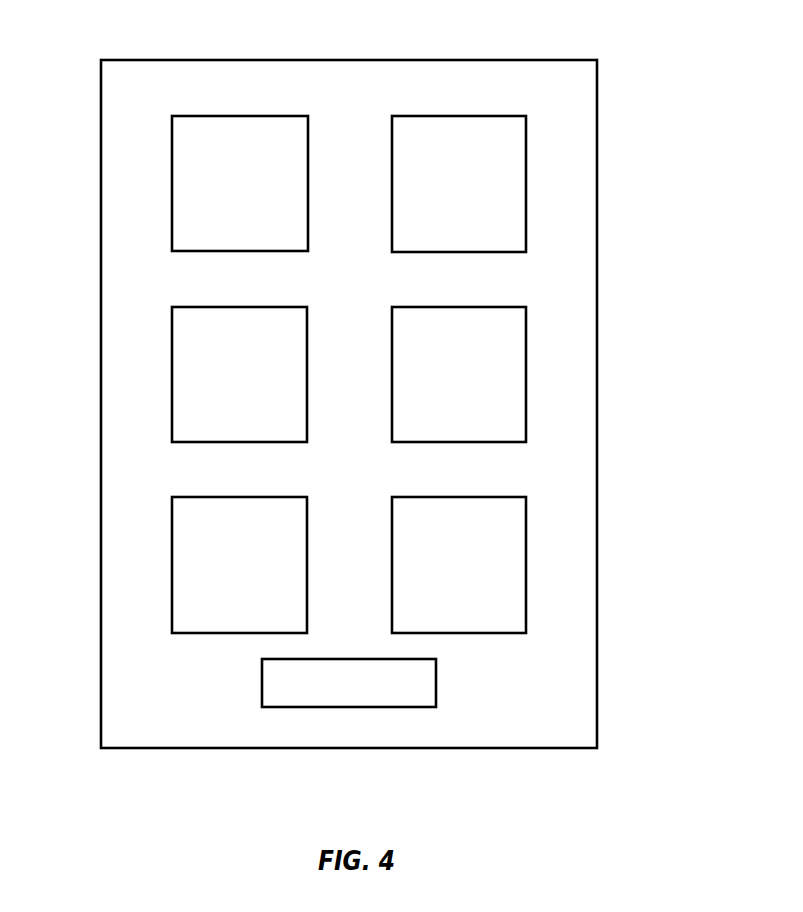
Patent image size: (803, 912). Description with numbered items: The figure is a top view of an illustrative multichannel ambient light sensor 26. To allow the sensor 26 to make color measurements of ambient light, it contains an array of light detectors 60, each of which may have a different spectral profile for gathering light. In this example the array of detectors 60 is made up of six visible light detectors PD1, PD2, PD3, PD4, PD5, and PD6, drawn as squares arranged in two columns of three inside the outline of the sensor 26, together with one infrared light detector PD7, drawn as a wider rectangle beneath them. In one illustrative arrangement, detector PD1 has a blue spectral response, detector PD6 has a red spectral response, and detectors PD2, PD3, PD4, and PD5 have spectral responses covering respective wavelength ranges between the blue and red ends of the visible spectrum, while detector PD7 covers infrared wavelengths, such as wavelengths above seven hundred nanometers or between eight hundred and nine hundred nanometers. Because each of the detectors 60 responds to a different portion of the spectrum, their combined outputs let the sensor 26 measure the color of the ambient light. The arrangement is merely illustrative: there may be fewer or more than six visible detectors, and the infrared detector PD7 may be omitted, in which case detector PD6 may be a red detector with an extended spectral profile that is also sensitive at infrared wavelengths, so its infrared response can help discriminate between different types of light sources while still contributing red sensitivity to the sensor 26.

The sensor 26 is at (535, 60).
The light detectors 60 is at (347, 456).
The visible light detector PD1 is at (240, 183).
The visible light detector PD2 is at (239, 374).
The visible light detector PD3 is at (239, 565).
The visible light detector PD4 is at (459, 184).
The visible light detector PD5 is at (459, 374).
The visible light detector PD6 is at (459, 565).
The infrared light detector PD7 is at (349, 683).